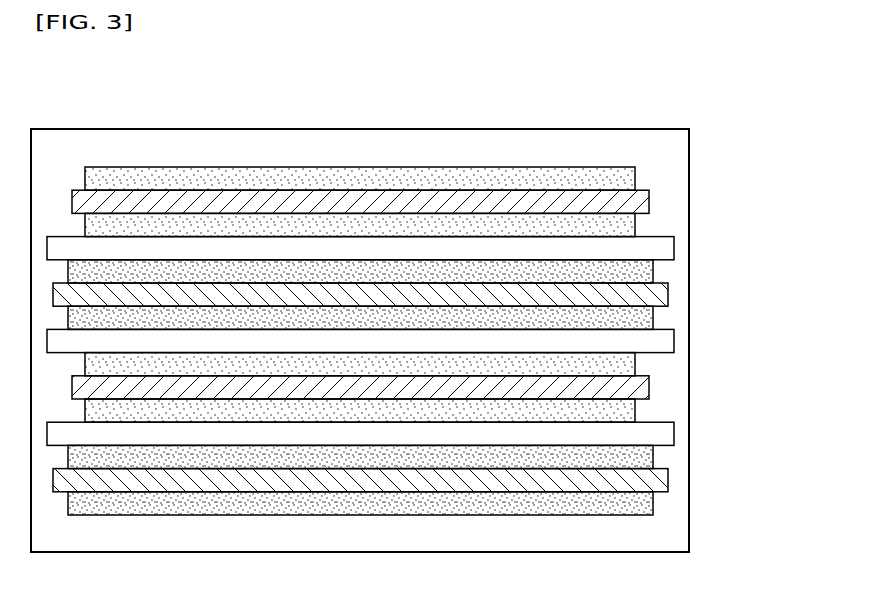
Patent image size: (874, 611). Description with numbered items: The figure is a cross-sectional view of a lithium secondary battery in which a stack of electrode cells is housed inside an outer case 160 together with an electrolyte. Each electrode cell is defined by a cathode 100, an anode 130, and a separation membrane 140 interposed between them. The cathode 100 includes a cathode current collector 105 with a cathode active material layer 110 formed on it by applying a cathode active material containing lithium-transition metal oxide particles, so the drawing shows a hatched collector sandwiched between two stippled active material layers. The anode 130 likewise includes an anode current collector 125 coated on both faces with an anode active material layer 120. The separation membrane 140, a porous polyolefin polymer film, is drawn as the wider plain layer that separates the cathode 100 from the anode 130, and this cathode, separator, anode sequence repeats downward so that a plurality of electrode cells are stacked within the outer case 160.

The cathode 100 is at (450, 293).
The cathode current collector 105 is at (650, 199).
The cathode active material layer 110 is at (630, 178).
The anode active material layer 120 is at (645, 273).
The anode current collector 125 is at (668, 295).
The anode 130 is at (440, 387).
The separation membrane 140 is at (389, 250).
The outer case 160 is at (625, 129).